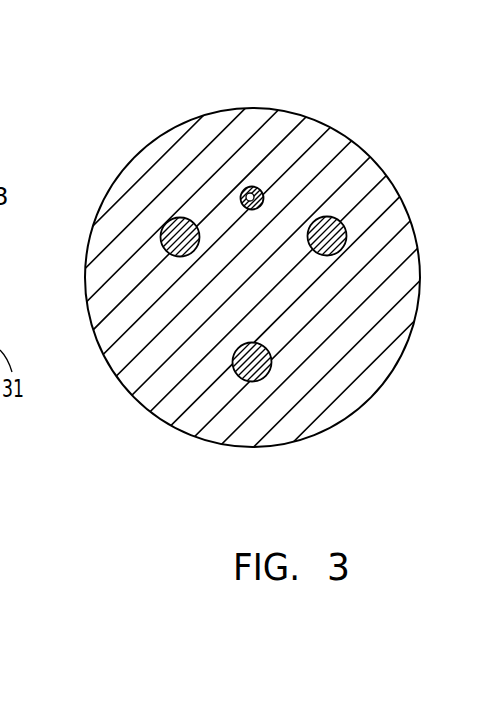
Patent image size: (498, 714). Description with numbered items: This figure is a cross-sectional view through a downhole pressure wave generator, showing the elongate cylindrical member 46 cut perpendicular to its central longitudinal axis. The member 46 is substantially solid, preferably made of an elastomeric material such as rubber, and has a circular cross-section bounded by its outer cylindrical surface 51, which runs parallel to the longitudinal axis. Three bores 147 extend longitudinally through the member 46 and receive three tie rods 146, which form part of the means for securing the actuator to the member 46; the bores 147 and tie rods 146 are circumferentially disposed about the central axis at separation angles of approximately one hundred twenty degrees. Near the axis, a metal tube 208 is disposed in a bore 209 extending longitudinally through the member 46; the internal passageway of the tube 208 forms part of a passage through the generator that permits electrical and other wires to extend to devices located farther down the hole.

The elongate cylindrical member 46 is at (394, 162).
The outer cylindrical surface 51 is at (408, 205).
The tie rods 146 is at (337, 253).
The bores 147 is at (161, 236).
The metal tube 208 is at (245, 188).
The bore 209 is at (266, 206).